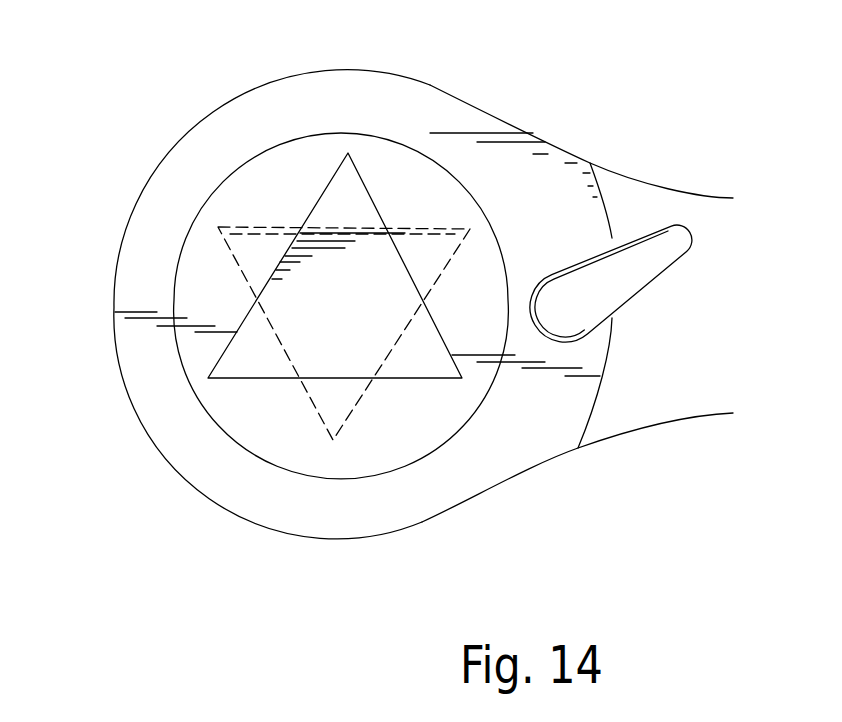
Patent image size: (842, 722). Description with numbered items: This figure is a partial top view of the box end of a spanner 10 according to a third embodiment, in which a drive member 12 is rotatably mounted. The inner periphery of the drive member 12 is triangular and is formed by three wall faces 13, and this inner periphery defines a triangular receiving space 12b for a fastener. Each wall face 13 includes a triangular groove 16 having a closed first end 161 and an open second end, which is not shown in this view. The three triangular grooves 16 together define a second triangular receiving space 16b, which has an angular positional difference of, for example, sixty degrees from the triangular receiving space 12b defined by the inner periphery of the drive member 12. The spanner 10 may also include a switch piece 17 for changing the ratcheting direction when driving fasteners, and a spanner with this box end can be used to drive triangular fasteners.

The spanner 10 is at (597, 467).
The drive member 12 is at (367, 143).
The triangular receiving space 12b is at (287, 257).
The wall face 13 is at (333, 181).
The triangular groove 16 is at (427, 226).
The closed first end 161 is at (333, 440).
The triangular receiving space 16b is at (333, 440).
The switch piece 17 is at (677, 237).